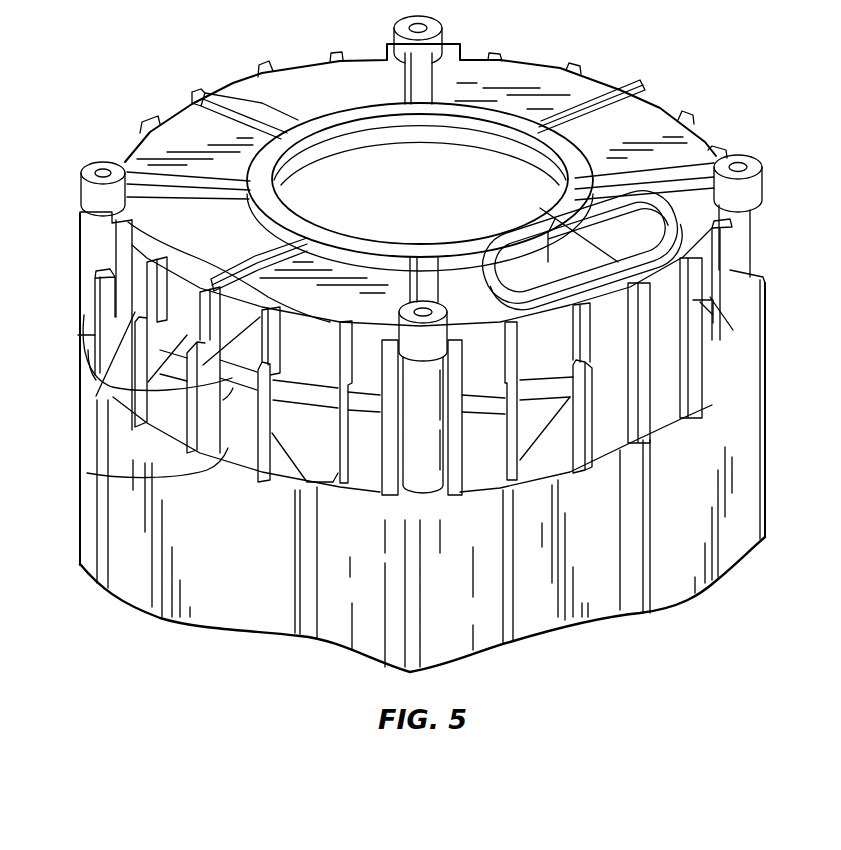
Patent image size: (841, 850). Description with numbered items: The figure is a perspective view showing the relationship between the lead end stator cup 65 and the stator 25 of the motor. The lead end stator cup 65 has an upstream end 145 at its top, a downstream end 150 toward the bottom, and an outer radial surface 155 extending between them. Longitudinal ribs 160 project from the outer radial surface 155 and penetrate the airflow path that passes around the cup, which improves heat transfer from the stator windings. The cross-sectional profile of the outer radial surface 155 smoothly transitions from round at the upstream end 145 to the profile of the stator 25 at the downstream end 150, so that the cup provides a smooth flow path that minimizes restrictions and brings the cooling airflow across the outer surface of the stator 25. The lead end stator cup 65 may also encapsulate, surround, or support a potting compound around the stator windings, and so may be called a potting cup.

The lead end stator cup 65 is at (660, 106).
The upstream end 145 is at (215, 252).
The longitudinal ribs 160 is at (268, 330).
The outer radial surface 155 is at (232, 398).
The downstream end 150 is at (215, 467).
The stator 25 is at (764, 440).